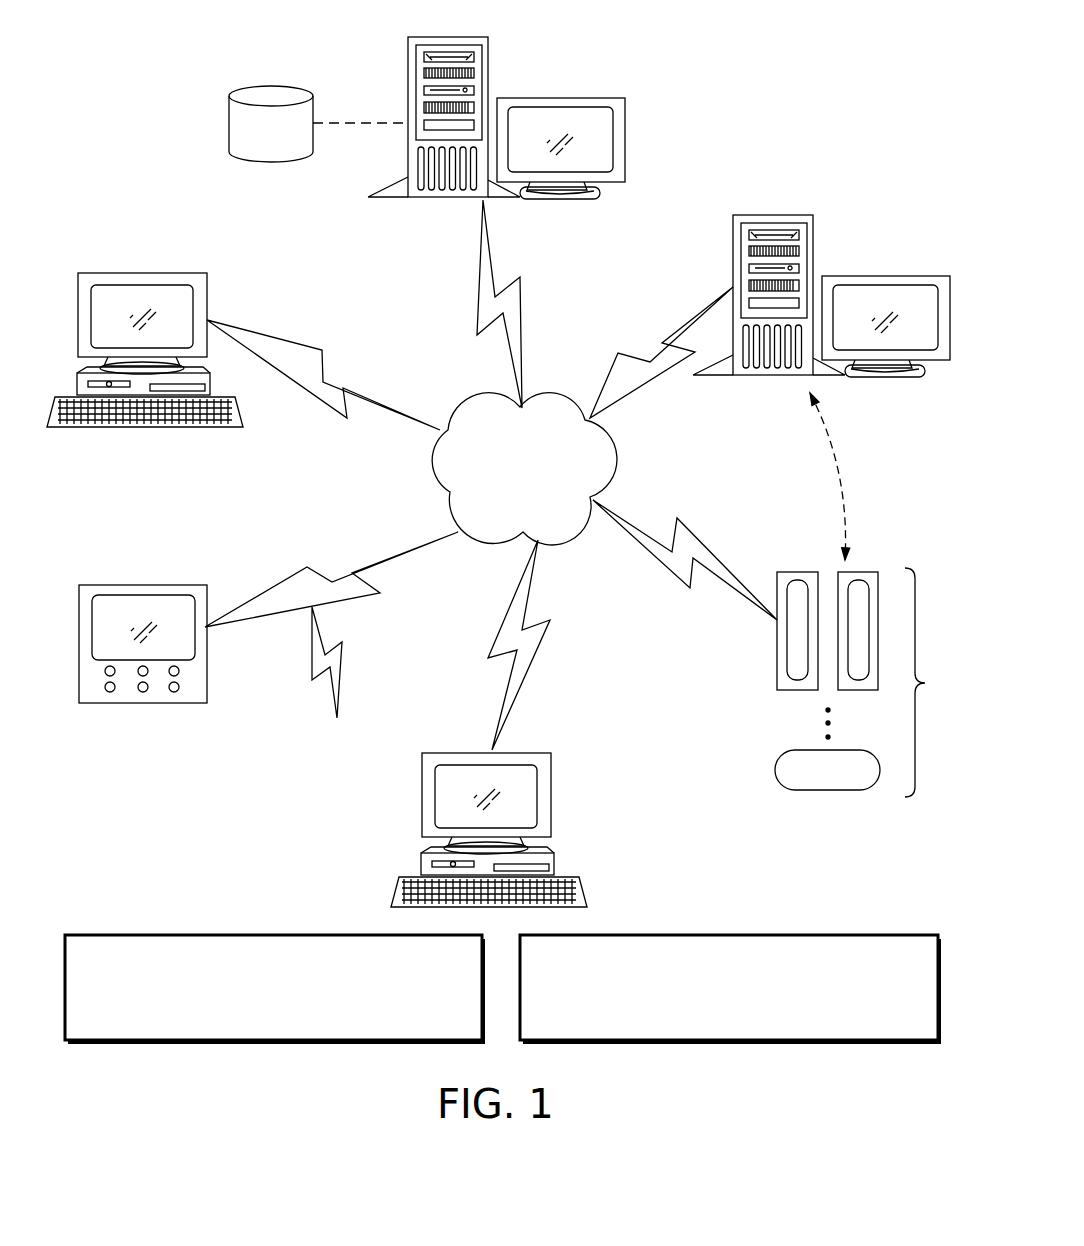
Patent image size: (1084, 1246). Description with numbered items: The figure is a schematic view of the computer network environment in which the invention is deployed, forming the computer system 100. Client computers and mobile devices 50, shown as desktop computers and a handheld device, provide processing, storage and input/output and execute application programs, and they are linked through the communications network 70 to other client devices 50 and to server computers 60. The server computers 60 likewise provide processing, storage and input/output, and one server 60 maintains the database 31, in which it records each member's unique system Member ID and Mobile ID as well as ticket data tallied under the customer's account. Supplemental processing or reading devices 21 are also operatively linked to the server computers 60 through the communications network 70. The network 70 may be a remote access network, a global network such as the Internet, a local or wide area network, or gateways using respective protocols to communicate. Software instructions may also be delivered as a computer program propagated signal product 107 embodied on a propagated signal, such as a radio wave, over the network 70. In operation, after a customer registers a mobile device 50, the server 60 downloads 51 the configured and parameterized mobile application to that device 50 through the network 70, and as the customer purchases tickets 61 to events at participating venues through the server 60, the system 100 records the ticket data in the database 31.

The computer system 100 is at (765, 68).
The database 31 is at (254, 139).
The server computer 60 is at (556, 98).
The client computer/mobile device 50 is at (143, 273).
The communications network 70 is at (537, 500).
The computer program propagated signal product 107 is at (340, 688).
The supplemental processing or reading devices 21 is at (866, 595).
The download of mobile application 51 is at (129, 935).
The ticket purchase 61 is at (878, 935).